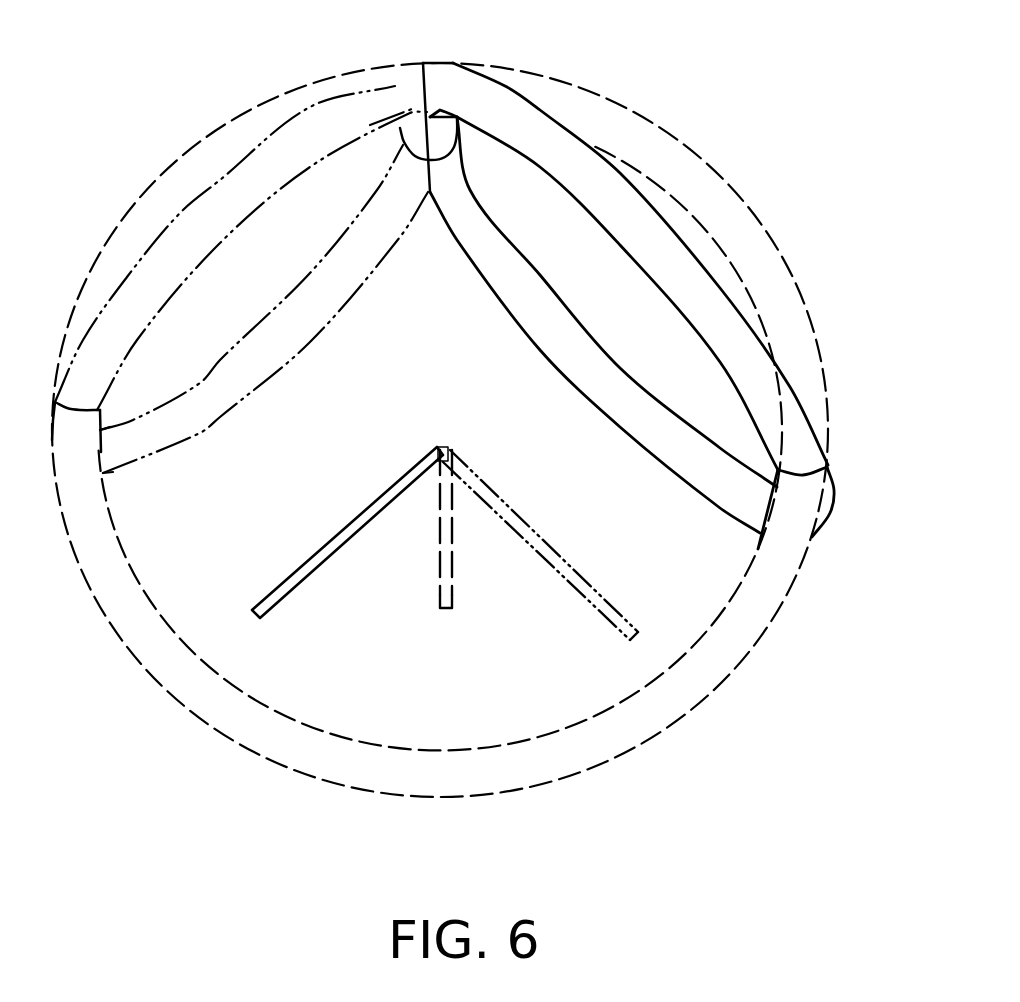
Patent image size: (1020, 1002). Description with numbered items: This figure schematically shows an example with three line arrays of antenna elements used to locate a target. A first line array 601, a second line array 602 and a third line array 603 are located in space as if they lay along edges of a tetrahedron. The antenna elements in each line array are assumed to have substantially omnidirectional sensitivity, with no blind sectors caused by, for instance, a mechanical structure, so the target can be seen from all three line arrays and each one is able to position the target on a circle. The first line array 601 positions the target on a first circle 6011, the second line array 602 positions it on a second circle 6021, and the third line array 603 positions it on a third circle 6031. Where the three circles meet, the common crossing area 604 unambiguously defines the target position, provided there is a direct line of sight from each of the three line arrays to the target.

The first line array 601 is at (592, 603).
The second line array 602 is at (440, 565).
The third line array 603 is at (287, 578).
The common crossing area 604 is at (380, 92).
The first circle 6011 is at (193, 228).
The second circle 6021 is at (638, 740).
The third circle 6031 is at (667, 257).